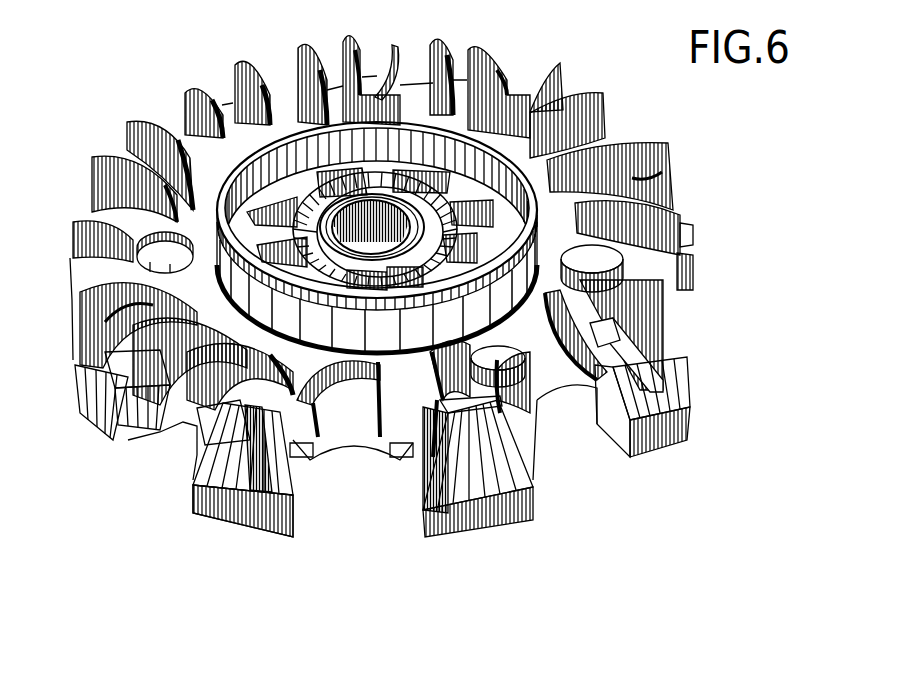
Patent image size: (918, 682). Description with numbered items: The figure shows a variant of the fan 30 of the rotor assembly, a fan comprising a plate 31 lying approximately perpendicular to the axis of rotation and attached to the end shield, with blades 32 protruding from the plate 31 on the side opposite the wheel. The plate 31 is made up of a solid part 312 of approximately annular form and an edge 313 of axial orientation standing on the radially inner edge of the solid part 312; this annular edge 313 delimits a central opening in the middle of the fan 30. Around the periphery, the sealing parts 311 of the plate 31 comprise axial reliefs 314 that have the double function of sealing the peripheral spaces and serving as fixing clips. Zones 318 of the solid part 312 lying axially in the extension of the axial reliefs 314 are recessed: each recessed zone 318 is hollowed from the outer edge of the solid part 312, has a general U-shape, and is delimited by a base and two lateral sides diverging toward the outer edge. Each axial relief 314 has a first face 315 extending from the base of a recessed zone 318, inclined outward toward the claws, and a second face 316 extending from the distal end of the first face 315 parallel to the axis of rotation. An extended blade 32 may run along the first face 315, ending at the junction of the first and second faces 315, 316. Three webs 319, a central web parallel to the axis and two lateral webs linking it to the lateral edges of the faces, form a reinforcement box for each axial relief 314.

The fan 30 is at (706, 258).
The plate 31 is at (172, 418).
The blades 32 is at (655, 143).
The sealing parts 311 is at (505, 422).
The solid part 312 is at (135, 140).
The edge 313 is at (268, 137).
The axial relief 314 is at (216, 519).
The first face 315 is at (272, 482).
The second face 316 is at (278, 522).
The recessed zones 318 is at (206, 428).
The webs 319 is at (612, 412).